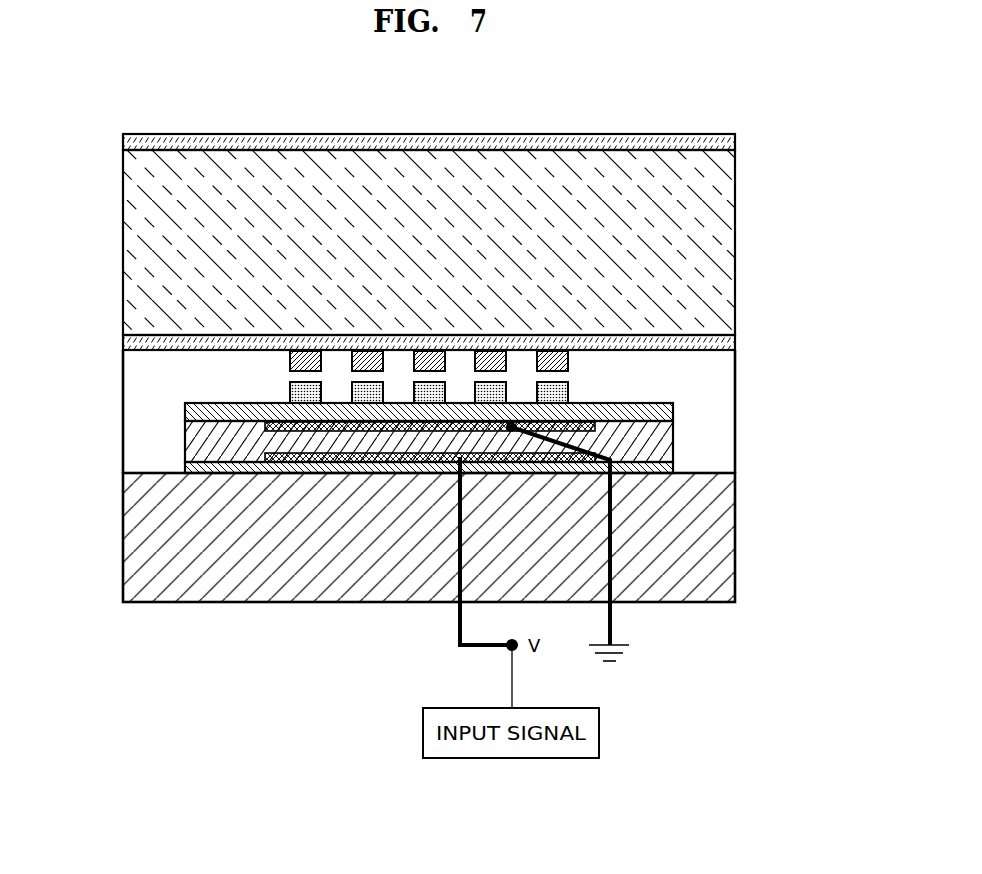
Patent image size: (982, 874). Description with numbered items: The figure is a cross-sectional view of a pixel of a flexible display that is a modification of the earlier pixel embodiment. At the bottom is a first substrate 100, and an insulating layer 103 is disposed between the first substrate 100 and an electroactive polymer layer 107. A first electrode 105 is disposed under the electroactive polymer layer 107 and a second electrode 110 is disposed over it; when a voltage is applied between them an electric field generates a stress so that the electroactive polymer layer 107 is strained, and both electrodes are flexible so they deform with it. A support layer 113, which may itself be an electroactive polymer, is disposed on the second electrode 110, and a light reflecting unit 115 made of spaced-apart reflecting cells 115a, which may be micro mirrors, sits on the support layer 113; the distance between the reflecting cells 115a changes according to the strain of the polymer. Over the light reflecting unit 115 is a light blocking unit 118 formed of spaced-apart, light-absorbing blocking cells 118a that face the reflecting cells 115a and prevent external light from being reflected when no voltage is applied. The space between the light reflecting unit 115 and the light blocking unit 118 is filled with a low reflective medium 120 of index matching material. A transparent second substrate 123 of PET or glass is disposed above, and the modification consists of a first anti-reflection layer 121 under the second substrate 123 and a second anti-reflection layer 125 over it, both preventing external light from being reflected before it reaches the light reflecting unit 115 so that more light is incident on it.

The first substrate 100 is at (137, 548).
The insulating layer 103 is at (652, 476).
The first electrode 105 is at (265, 478).
The electroactive polymer layer 107 is at (662, 445).
The second electrode 110 is at (258, 427).
The support layer 113 is at (668, 414).
The light reflecting unit 115 is at (276, 390).
The reflecting cells 115a is at (570, 397).
The light blocking unit 118 is at (280, 358).
The blocking cells 118a is at (567, 364).
The low reflective medium 120 is at (163, 392).
The first anti-reflection layer 121 is at (722, 343).
The second substrate 123 is at (705, 196).
The second anti-reflection layer 125 is at (728, 144).